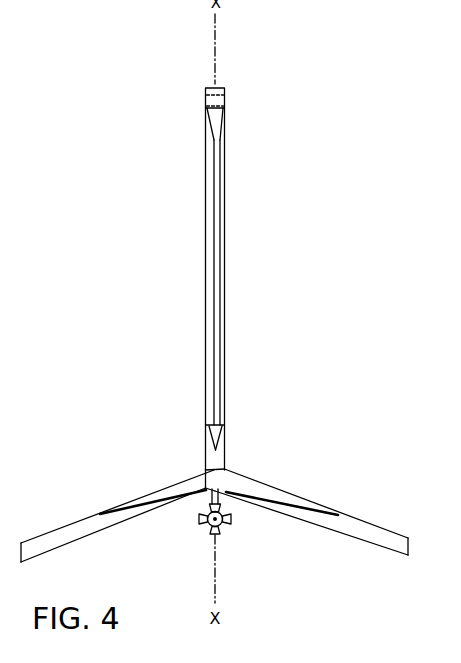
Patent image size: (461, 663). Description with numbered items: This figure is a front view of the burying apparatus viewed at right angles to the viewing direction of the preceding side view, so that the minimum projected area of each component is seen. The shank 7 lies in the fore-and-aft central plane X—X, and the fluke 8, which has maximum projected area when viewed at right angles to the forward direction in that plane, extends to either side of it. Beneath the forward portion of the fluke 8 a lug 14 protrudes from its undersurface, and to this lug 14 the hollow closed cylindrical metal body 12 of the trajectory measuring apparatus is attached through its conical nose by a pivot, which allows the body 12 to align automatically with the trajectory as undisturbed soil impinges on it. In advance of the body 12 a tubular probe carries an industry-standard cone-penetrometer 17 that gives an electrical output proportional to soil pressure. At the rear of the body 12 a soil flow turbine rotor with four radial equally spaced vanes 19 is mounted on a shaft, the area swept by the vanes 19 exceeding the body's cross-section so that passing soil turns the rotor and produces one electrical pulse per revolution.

The shank 7 is at (214, 251).
The fluke 8 is at (287, 500).
The hollow closed cylindrical metal body 12 is at (224, 511).
The lug 14 is at (226, 490).
The cone-penetrometer 17 is at (222, 524).
The turbine vanes 19 is at (206, 519).